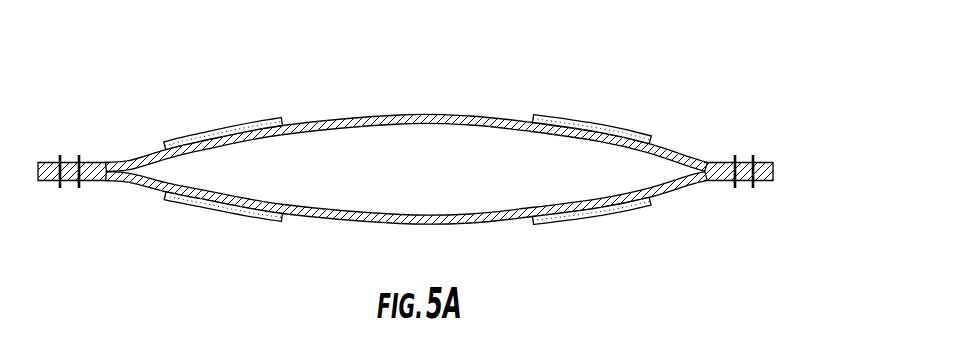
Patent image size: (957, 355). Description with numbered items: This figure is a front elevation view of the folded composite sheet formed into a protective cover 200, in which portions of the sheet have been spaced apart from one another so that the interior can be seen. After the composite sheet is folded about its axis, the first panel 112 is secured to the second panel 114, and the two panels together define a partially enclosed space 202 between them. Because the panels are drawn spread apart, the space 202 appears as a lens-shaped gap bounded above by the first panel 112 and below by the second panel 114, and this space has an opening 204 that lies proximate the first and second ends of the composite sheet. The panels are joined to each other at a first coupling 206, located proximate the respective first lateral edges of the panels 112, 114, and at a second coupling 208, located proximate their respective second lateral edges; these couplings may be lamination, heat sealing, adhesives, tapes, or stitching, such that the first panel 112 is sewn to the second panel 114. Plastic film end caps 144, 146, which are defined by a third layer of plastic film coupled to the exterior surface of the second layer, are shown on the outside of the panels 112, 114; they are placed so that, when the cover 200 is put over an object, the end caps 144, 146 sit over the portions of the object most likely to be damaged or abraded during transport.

The protective cover 200 is at (423, 141).
The first panel 112 is at (385, 110).
The second panel 114 is at (379, 226).
The plastic film end cap 144 is at (234, 124).
The plastic film end cap 146 is at (607, 126).
The partially enclosed space 202 is at (447, 175).
The opening 204 is at (506, 147).
The first coupling 206 is at (78, 151).
The second coupling 208 is at (751, 146).